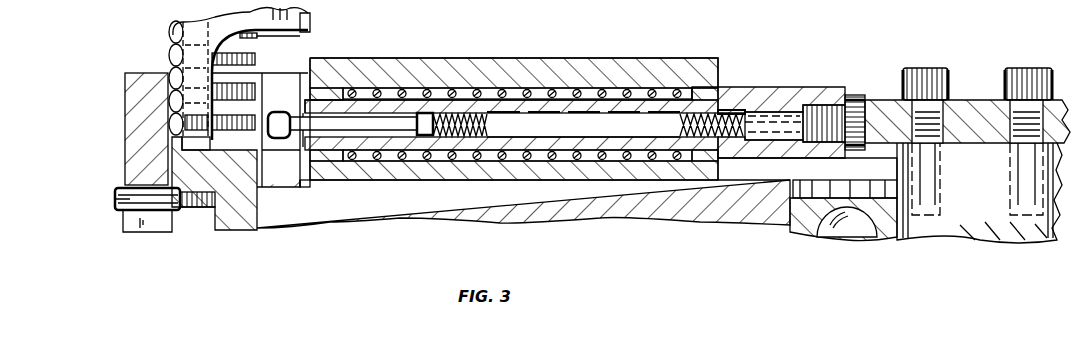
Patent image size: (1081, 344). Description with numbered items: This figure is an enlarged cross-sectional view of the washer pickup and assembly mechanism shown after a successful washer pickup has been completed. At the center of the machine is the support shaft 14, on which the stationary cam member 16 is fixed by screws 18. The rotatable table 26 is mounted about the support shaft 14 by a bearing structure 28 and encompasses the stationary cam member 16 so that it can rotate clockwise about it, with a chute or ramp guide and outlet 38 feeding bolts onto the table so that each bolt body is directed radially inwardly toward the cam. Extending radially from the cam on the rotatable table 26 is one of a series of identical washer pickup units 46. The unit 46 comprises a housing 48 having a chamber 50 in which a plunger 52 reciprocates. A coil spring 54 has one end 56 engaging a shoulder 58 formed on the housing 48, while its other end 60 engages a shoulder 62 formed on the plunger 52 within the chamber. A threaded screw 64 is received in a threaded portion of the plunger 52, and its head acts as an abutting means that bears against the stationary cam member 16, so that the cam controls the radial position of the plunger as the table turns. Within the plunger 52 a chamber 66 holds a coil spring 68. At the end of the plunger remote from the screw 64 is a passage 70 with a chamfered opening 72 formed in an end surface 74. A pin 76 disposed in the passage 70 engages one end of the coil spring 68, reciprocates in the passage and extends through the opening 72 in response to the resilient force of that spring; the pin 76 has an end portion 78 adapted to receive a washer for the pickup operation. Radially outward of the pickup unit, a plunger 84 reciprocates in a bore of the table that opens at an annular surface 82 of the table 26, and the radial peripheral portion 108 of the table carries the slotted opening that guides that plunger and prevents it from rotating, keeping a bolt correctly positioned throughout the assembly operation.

The support shaft 14 is at (977, 222).
The stationary cam member 16 is at (973, 107).
The screws 18 is at (928, 68).
The rotatable table 26 is at (353, 215).
The bearing structure 28 is at (860, 230).
The chute or ramp guide and outlet 38 is at (312, 22).
The washer pickup unit 46 is at (706, 50).
The housing 48 is at (500, 58).
The chamber 50 is at (563, 92).
The plunger 52 is at (772, 93).
The coil spring 54 is at (380, 150).
The one end of coil spring 56 is at (350, 96).
The shoulder 58 is at (308, 168).
The other end of coil spring 60 is at (677, 160).
The shoulder 62 is at (692, 92).
The threaded screw 64 is at (860, 97).
The chamber 66 is at (588, 124).
The coil spring 68 is at (723, 110).
The passage 70 is at (398, 127).
The chamfered opening 72 is at (303, 110).
The end surface 74 is at (298, 147).
The pin 76 is at (410, 125).
The end portion 78 is at (278, 112).
The annular surface 82 is at (170, 72).
The plunger 84 is at (227, 220).
The radial peripheral portion 108 is at (132, 130).